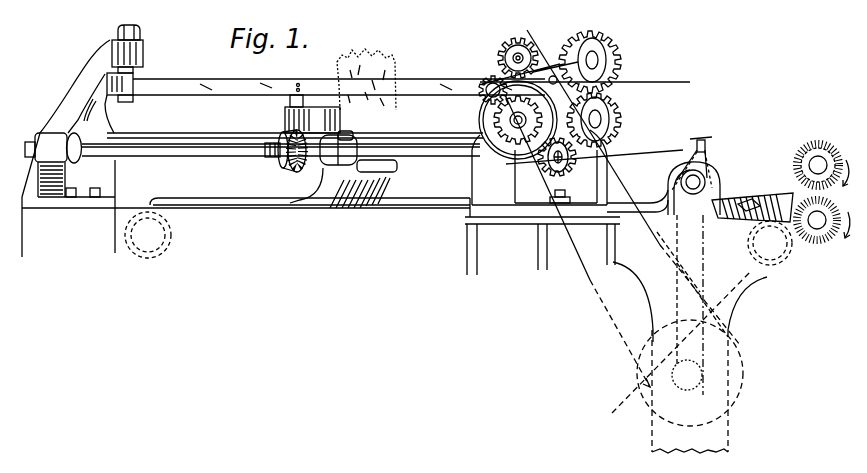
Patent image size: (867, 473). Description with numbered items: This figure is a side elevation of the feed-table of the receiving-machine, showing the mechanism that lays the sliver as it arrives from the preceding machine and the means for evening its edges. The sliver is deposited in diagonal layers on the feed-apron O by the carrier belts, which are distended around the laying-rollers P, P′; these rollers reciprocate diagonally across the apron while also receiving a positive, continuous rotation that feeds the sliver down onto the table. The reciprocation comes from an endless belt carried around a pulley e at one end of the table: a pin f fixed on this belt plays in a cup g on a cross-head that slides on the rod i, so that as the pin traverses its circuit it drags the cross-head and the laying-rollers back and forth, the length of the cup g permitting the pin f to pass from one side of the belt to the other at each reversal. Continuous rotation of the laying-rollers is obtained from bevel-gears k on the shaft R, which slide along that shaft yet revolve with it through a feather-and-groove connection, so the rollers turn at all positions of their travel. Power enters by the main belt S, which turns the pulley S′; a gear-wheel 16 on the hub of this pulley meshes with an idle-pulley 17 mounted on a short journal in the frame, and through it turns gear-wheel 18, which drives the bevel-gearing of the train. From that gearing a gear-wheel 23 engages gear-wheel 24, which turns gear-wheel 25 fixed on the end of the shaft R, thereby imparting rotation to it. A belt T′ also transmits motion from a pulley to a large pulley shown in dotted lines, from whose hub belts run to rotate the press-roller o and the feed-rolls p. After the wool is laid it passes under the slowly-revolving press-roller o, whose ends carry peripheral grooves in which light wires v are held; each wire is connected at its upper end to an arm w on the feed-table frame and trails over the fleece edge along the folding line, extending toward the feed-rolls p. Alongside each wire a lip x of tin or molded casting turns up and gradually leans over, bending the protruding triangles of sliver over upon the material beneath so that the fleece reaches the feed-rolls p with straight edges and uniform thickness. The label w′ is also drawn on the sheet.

The pulley e is at (140, 74).
The bar a is at (426, 78).
The main belt S is at (585, 73).
The rod i is at (422, 134).
The shaft R is at (157, 158).
The pin f is at (290, 100).
The cup g is at (312, 120).
The bevel-gear k is at (273, 163).
The laying-roller P is at (326, 166).
The laying-roller P′ is at (398, 166).
The feed-apron O is at (423, 219).
The belt T′ is at (525, 33).
The gear-wheel 18 is at (522, 56).
The gear-wheel 16 is at (514, 120).
The idle-pulley 17 is at (492, 65).
The gear-wheel 23 is at (603, 23).
The gear-wheel 24 is at (612, 97).
The gear-wheel 25 is at (570, 162).
The pulley S′ is at (588, 163).
The wire v is at (682, 173).
The arm w is at (692, 156).
The press-roller o is at (724, 198).
The lip x is at (752, 207).
The feed-roll p is at (823, 192).
The arm position w′ is at (705, 264).